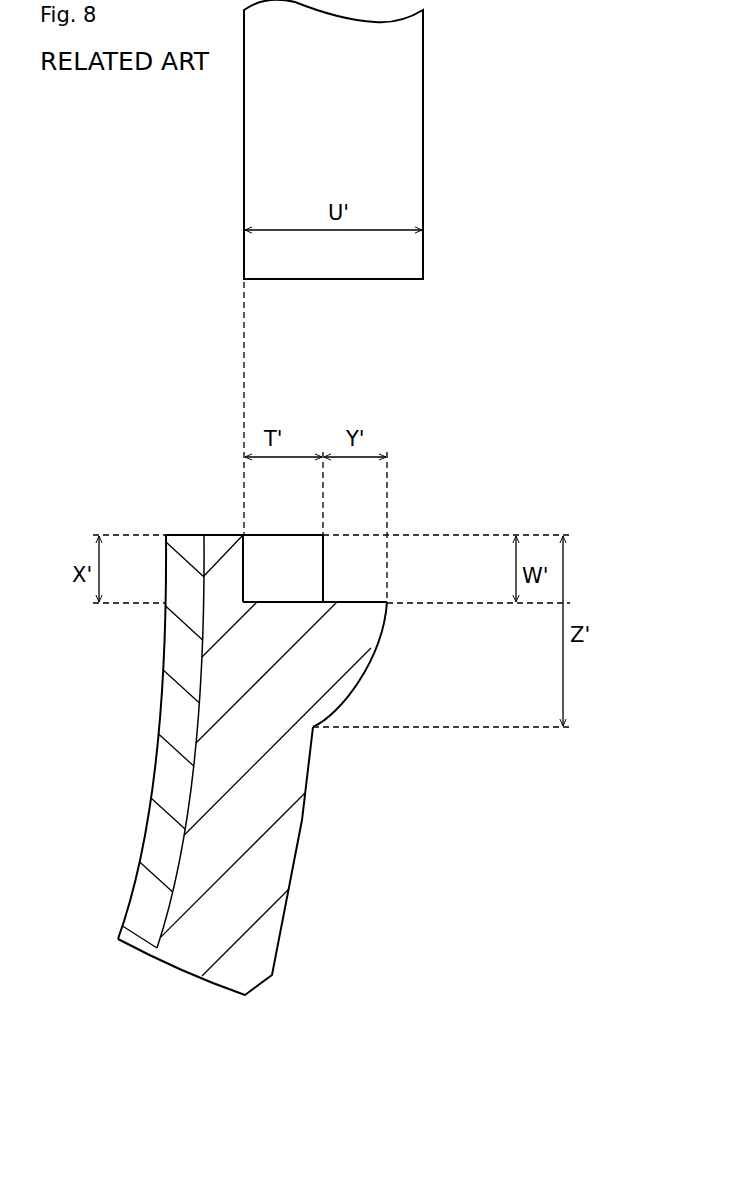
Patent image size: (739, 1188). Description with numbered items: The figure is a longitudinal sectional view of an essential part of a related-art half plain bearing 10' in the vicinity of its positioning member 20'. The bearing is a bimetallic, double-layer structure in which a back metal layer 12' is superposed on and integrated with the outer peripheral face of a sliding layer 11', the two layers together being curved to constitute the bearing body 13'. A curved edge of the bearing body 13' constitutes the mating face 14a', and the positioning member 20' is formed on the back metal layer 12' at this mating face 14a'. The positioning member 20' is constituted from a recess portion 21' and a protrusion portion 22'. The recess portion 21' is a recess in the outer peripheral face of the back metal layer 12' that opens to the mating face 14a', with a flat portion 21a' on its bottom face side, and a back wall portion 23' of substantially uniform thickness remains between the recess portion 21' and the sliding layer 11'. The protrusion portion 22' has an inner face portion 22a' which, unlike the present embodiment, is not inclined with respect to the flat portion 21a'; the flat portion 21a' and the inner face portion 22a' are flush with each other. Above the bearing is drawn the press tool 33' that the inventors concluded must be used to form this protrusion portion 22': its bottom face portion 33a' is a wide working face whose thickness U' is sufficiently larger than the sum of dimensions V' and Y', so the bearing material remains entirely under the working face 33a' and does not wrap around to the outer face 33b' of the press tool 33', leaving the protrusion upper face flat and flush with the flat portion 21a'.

The half plain bearing 10' is at (260, 719).
The sliding layer 11' is at (146, 765).
The back metal layer 12' is at (229, 780).
The bearing body 13' is at (207, 780).
The mating face 14a' is at (154, 504).
The positioning member 20' is at (360, 602).
The recess portion 21' is at (283, 544).
The flat portion 21a' is at (283, 570).
The protrusion portion 22' is at (383, 664).
The inner face portion 22a' is at (355, 570).
The back wall portion 23' is at (223, 499).
The press tool 33' is at (372, 139).
The bottom face portion 33a' is at (361, 304).
The outer face 33b' is at (472, 145).